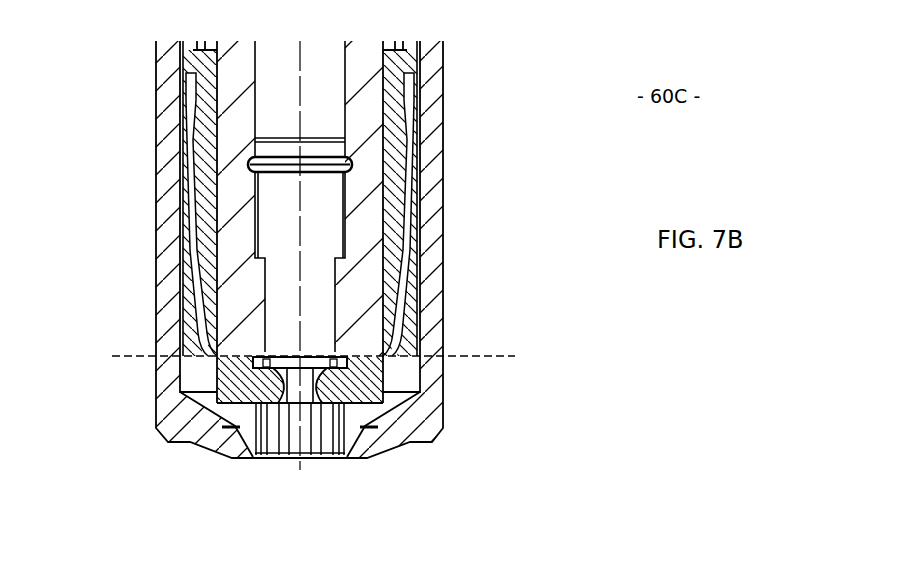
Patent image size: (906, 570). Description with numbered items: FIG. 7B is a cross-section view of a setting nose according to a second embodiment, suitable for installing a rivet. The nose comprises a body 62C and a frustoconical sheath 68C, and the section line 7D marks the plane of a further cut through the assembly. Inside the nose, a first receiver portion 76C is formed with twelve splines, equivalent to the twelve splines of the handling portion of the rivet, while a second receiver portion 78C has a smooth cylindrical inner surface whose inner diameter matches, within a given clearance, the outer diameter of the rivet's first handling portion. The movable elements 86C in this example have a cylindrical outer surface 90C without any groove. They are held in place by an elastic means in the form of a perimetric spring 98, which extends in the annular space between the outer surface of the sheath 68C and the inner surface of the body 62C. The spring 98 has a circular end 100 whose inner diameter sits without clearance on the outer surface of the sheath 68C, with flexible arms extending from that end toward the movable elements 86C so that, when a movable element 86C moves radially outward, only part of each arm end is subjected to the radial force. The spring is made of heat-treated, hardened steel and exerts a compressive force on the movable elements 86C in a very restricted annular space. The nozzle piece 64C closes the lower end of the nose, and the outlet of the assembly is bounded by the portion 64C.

The body 62C is at (445, 270).
The nozzle 64C is at (362, 458).
The frustoconical sheath 68C is at (405, 95).
The first receiver portion 76C is at (288, 432).
The second receiver portion 78C is at (291, 298).
The movable elements 86C is at (360, 392).
The cylindrical outer surface 90C is at (217, 382).
The perimetric spring 98 is at (425, 162).
The circular end 100 is at (193, 100).
The section line 7D is at (500, 346).